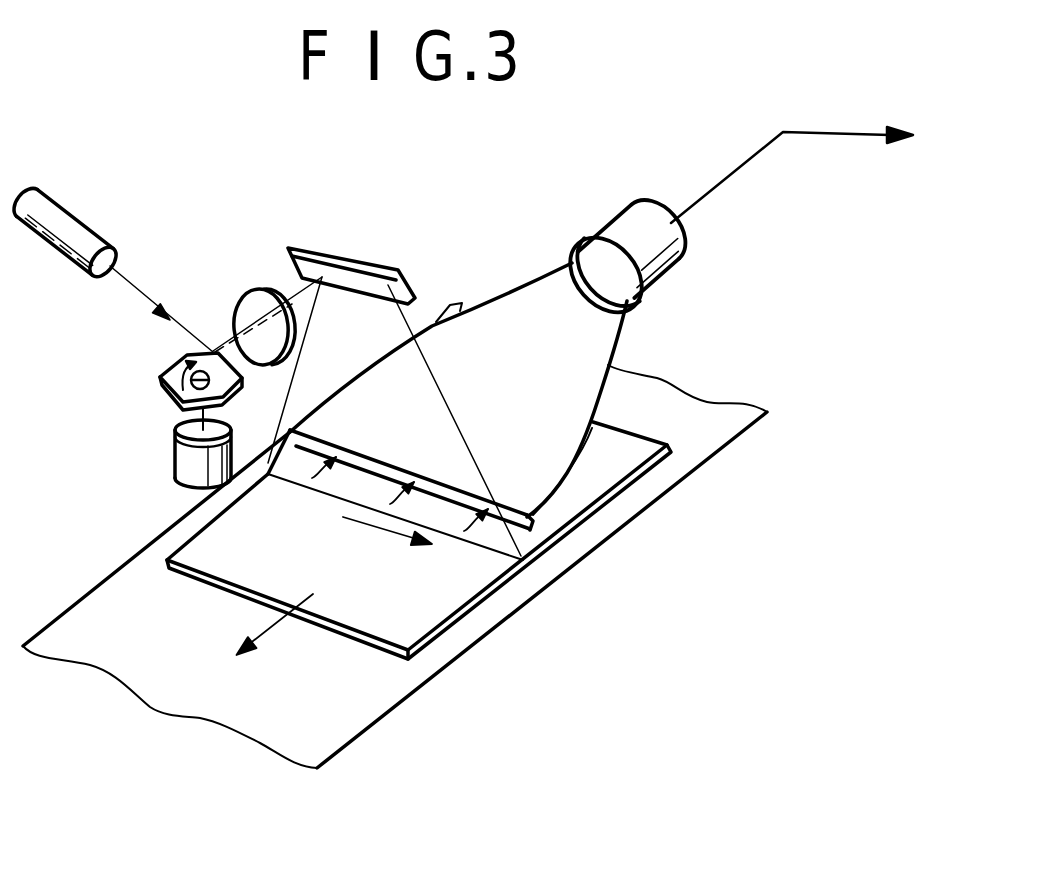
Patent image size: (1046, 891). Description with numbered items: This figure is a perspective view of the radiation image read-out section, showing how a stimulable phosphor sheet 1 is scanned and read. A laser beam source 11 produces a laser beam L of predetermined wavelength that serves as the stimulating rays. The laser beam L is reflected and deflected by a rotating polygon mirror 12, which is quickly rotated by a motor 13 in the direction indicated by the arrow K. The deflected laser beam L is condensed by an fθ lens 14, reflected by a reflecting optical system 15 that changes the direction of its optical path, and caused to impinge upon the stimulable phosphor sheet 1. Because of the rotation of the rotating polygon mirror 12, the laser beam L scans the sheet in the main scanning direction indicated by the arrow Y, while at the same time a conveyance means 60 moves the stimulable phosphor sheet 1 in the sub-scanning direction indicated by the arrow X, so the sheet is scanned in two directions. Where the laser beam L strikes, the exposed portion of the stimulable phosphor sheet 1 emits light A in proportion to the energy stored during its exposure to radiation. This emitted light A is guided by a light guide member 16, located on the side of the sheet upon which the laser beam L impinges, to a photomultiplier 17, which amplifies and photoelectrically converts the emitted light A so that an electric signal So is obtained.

The stimulable phosphor sheet 1 is at (428, 612).
The laser beam source 11 is at (97, 233).
The rotating polygon mirror 12 is at (160, 390).
The motor 13 is at (178, 465).
The fθ lens 14 is at (260, 288).
The reflecting optical system 15 is at (367, 267).
The light guide member 16 is at (518, 318).
The photomultiplier 17 is at (620, 222).
The conveyance means 60 is at (380, 693).
The direction of rotation of the rotating polygon mirror K is at (166, 360).
The laser beam L is at (452, 408).
The emitted light A is at (312, 478).
The sub-scanning direction X is at (280, 623).
The main scanning direction Y is at (384, 532).
The electric signal So is at (823, 132).